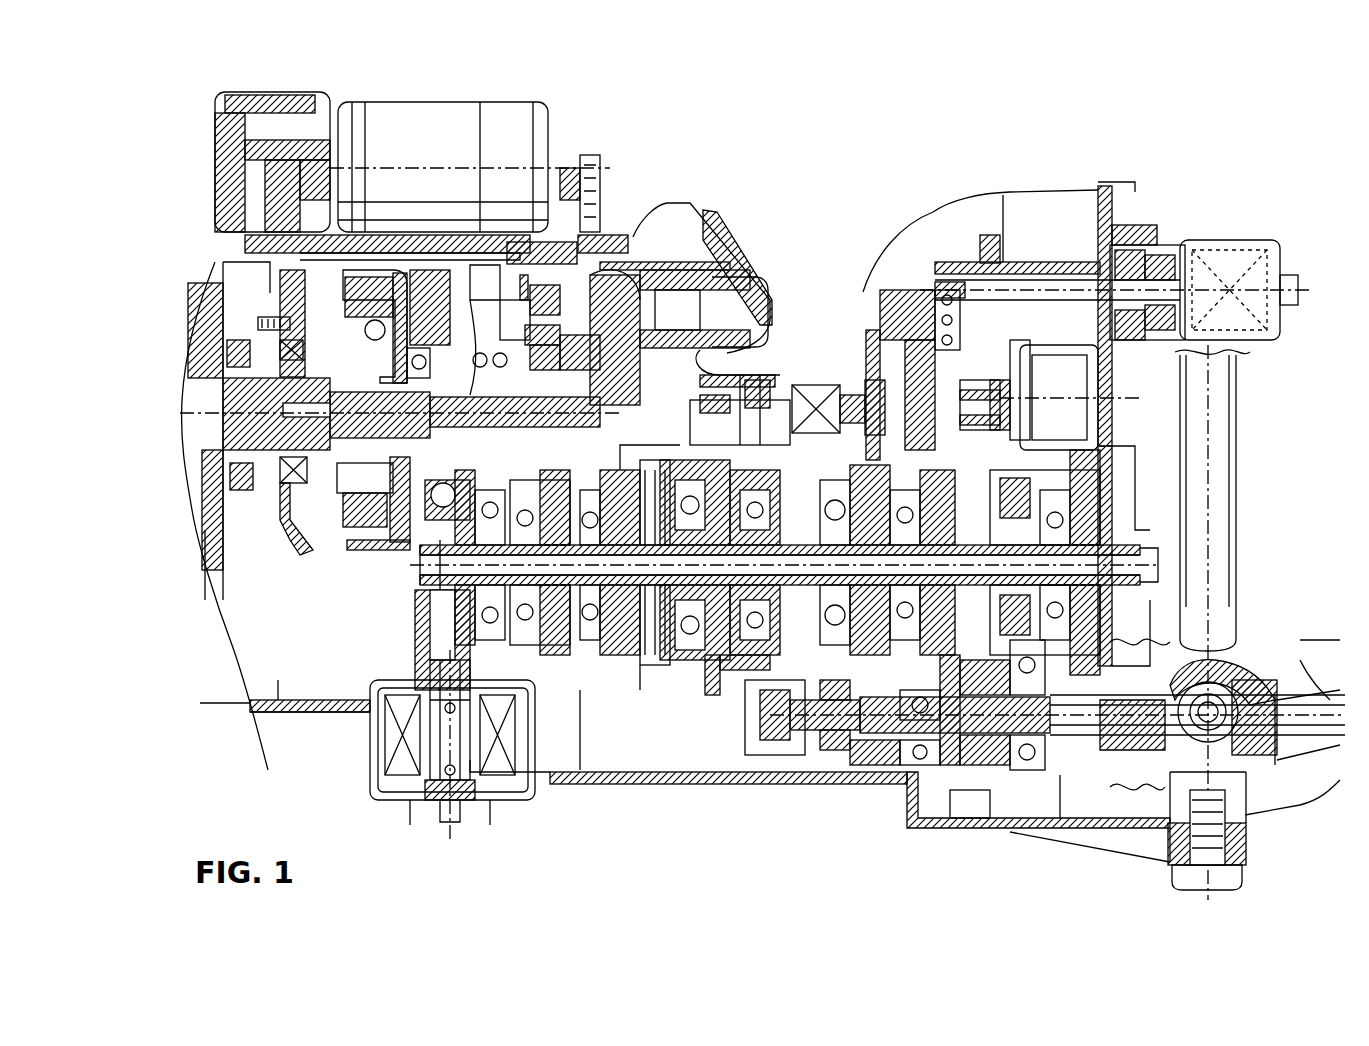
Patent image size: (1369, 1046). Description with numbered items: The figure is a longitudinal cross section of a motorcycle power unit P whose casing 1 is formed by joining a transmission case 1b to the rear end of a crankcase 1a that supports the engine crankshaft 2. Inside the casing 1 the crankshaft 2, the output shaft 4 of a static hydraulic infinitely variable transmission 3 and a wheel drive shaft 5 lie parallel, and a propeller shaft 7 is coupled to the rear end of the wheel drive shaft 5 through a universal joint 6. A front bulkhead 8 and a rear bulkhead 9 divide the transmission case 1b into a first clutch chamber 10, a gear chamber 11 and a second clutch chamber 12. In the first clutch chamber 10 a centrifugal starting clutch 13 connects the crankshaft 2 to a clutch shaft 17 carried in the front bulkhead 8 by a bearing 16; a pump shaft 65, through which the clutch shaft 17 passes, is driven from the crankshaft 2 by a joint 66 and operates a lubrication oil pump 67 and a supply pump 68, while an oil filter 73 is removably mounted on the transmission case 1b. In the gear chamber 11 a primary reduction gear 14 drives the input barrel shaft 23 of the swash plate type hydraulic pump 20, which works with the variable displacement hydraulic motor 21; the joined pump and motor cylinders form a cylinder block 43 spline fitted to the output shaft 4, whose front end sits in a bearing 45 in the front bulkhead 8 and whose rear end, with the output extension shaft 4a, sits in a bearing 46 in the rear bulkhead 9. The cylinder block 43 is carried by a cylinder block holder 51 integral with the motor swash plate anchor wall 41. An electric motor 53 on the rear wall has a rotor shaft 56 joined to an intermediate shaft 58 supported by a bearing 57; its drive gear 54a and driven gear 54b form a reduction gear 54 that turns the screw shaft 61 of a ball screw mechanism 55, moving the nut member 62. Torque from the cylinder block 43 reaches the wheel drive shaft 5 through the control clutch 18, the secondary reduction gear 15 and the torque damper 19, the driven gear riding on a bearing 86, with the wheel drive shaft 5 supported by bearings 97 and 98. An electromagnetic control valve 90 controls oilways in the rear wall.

The casing 1 is at (690, 795).
The crankcase 1a is at (212, 518).
The transmission case 1b is at (1098, 190).
The crankshaft 2 is at (190, 410).
The static hydraulic infinitely variable transmission 3 is at (660, 672).
The output shaft 4 is at (465, 545).
The output extension shaft 4a is at (1140, 568).
The wheel drive shaft 5 is at (1060, 717).
The universal joint 6 is at (1240, 652).
The propeller shaft 7 is at (1300, 695).
The front bulkhead 8 is at (492, 302).
The rear bulkhead 9 is at (965, 380).
The first clutch chamber 10 is at (325, 649).
The gear chamber 11 is at (573, 722).
The second clutch chamber 12 is at (1058, 808).
The centrifugal starting clutch 13 is at (373, 268).
The primary reduction gear 14 is at (540, 328).
The secondary reduction gear 15 is at (972, 820).
The bearing 16 is at (338, 324).
The clutch shaft 17 is at (516, 326).
The control clutch 18 is at (1055, 485).
The torque damper 19 is at (858, 770).
The swash plate type hydraulic pump 20 is at (650, 655).
The variable displacement swash plate type hydraulic motor 21 is at (757, 668).
The input barrel shaft 23 is at (545, 548).
The motor swash plate anchor wall 41 is at (834, 755).
The cylinder block 43 is at (630, 550).
The bearing 45 is at (440, 613).
The bearing 46 is at (950, 540).
The cylinder block holder 51 is at (745, 665).
The electric motor 53 is at (1230, 245).
The reduction gear 54 is at (915, 300).
The drive gear 54a is at (948, 292).
The driven gear 54b is at (987, 387).
The ball screw mechanism 55 is at (772, 400).
The rotor shaft 56 is at (1165, 265).
The bearing 57 is at (992, 262).
The intermediate shaft 58 is at (1030, 282).
The screw shaft 61 is at (738, 332).
The nut member 62 is at (810, 385).
The pump shaft 65 is at (675, 305).
The joint 66 is at (375, 326).
The lubrication oil pump 67 is at (565, 356).
The supply pump 68 is at (591, 337).
The oil filter 73 is at (375, 746).
The bearing 86 is at (970, 740).
The electromagnetic control valve 90 is at (1090, 413).
The bearing 97 is at (782, 740).
The bearing 98 is at (1170, 836).
The power unit P is at (625, 185).